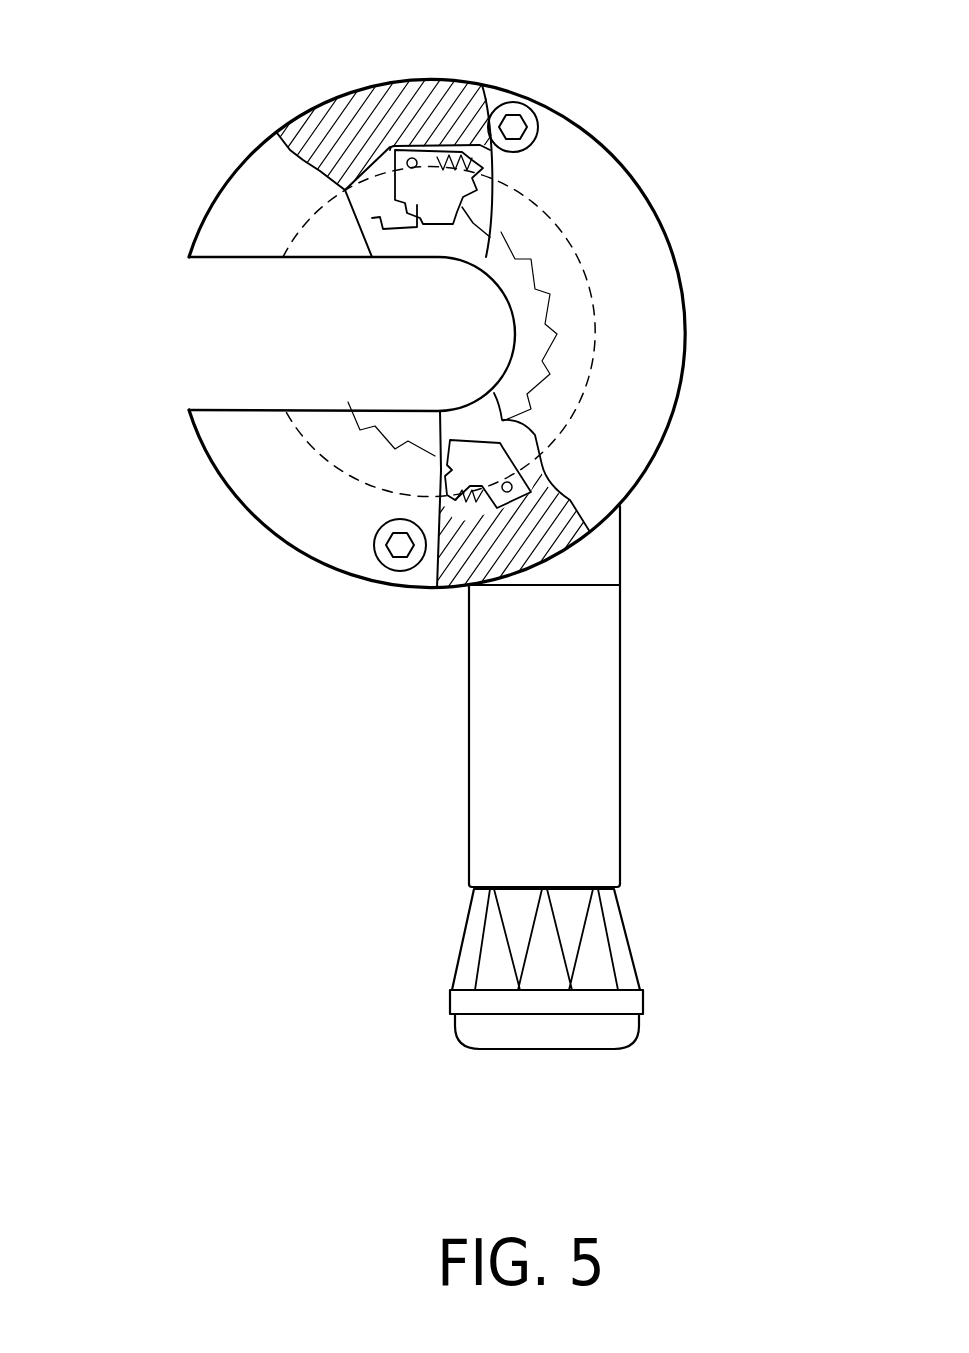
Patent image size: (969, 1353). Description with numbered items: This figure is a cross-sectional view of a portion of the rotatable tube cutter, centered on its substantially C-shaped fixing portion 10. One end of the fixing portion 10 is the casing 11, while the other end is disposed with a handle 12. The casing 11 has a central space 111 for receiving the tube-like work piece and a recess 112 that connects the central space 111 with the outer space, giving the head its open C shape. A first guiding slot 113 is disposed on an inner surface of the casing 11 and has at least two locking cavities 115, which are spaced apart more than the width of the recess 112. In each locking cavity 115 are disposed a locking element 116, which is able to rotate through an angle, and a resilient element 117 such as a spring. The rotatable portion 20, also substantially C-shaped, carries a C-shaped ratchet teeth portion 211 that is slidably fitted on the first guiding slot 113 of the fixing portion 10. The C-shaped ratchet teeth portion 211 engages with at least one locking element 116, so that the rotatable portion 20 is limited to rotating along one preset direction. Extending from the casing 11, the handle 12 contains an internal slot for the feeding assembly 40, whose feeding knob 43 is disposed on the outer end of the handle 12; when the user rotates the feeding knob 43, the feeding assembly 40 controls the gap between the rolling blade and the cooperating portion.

The fixing portion 10 is at (433, 542).
The casing 11 is at (432, 335).
The handle 12 is at (605, 735).
The rotatable portion 20 is at (544, 350).
The feeding assembly 40 is at (613, 976).
The feeding knob 43 is at (602, 1033).
The central space 111 is at (488, 365).
The recess 112 is at (213, 342).
The first guiding slot 113 is at (598, 307).
The locking cavity 115 is at (440, 197).
The locking element 116 is at (440, 197).
The resilient element 117 is at (458, 150).
The C-shaped ratchet teeth portion 211 is at (462, 233).